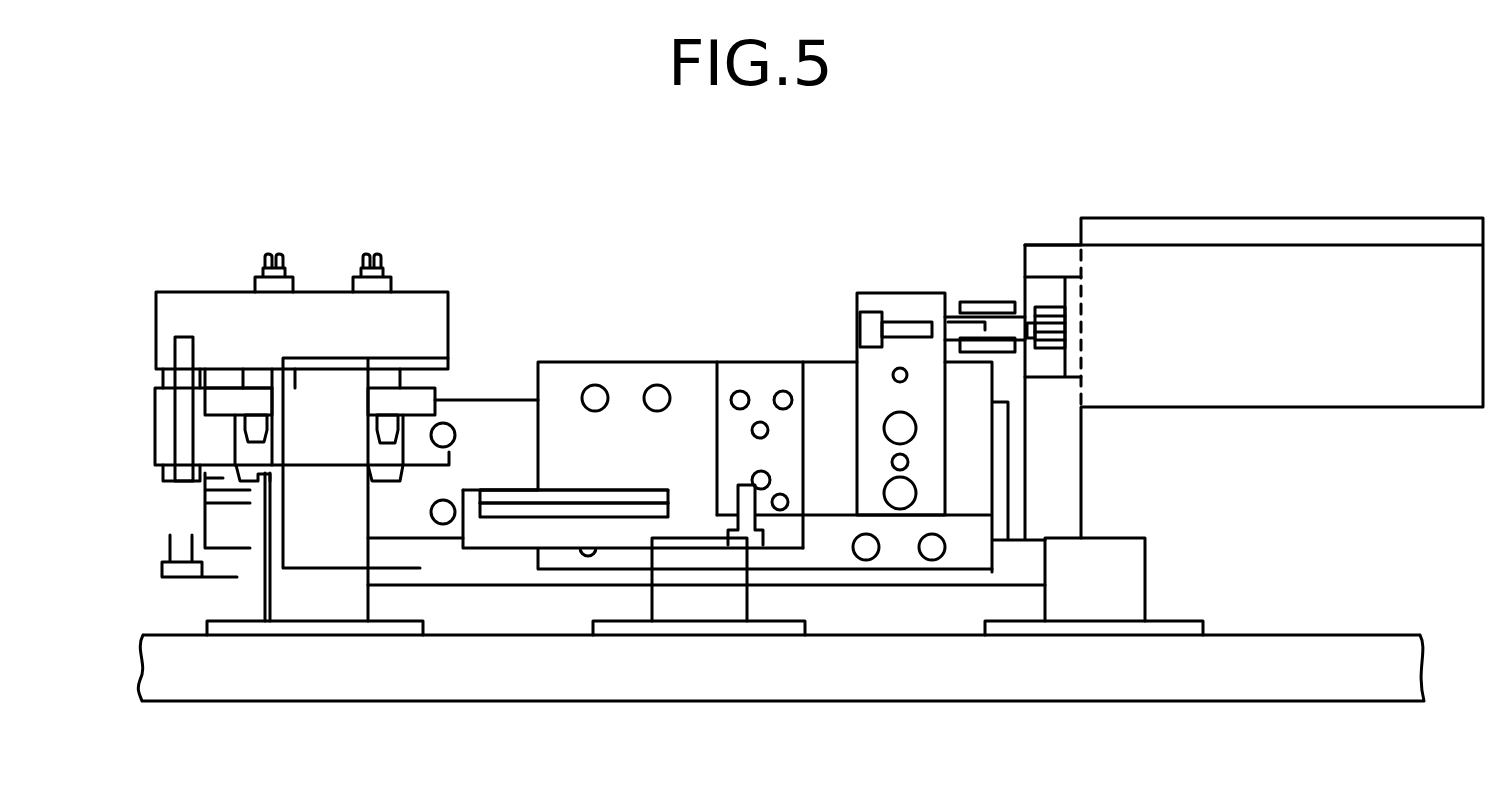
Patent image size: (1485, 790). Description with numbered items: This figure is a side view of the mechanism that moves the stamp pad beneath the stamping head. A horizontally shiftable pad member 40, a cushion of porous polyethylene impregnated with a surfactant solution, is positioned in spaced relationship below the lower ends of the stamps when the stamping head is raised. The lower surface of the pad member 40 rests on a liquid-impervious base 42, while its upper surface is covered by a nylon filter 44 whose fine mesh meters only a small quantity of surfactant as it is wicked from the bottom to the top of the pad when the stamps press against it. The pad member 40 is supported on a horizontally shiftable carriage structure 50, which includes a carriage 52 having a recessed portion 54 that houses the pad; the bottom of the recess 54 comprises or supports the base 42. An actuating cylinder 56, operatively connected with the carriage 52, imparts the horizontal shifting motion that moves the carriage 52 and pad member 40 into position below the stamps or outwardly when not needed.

The pad member 40 is at (496, 500).
The base 42 is at (480, 532).
The filter 44 is at (563, 482).
The carriage structure 50 is at (884, 281).
The carriage 52 is at (625, 362).
The recessed portion 54 is at (560, 508).
The actuating cylinder 56 is at (1150, 216).